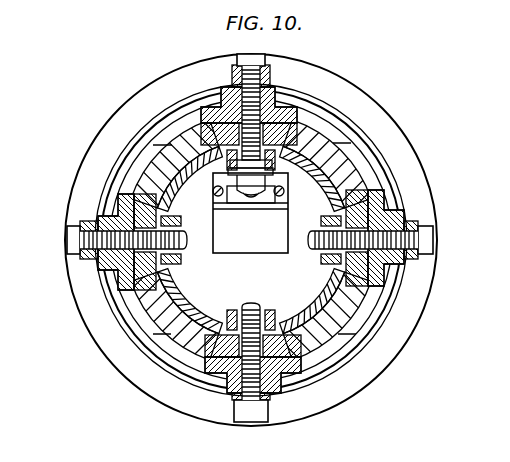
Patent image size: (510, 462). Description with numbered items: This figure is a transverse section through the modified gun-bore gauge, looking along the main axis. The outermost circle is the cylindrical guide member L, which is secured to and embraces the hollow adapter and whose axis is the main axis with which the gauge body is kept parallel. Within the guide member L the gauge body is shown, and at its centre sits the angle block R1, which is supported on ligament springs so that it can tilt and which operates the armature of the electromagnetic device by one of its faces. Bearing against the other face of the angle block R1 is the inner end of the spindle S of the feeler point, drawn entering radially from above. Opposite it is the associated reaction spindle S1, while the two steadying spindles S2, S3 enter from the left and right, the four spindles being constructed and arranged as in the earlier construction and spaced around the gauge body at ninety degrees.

The spindle of a feeler point S is at (263, 78).
The reaction spindle S1 is at (273, 392).
The steadying spindle S2 is at (103, 263).
The steadying spindle S3 is at (382, 242).
The cylindrical guide member L is at (362, 106).
The angle block R1 is at (272, 222).